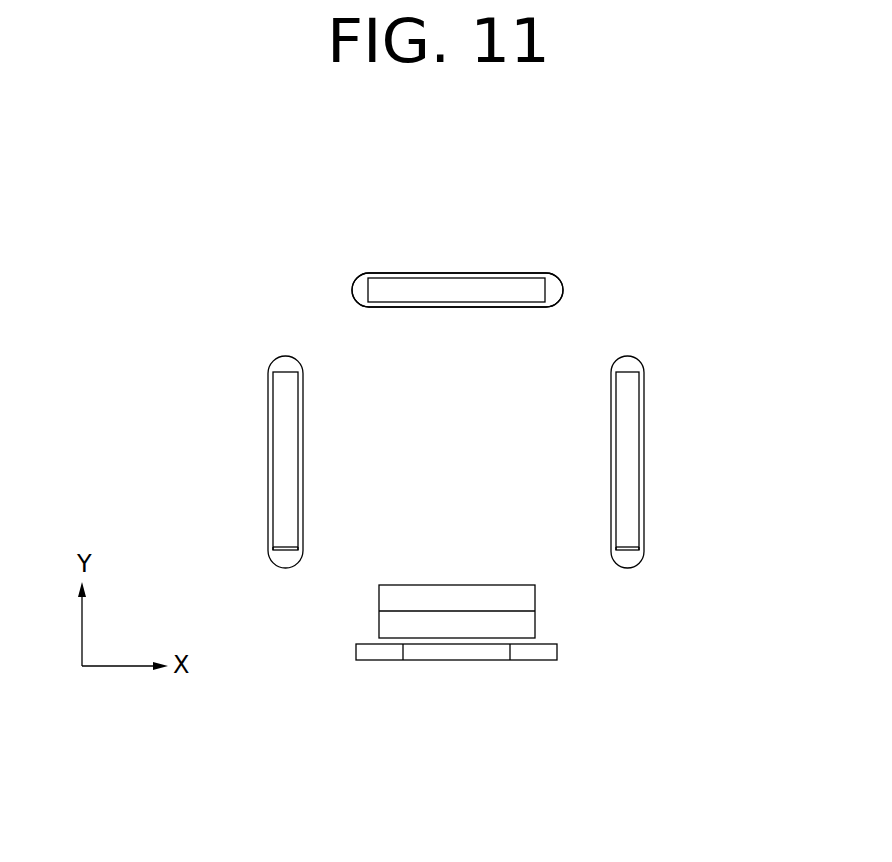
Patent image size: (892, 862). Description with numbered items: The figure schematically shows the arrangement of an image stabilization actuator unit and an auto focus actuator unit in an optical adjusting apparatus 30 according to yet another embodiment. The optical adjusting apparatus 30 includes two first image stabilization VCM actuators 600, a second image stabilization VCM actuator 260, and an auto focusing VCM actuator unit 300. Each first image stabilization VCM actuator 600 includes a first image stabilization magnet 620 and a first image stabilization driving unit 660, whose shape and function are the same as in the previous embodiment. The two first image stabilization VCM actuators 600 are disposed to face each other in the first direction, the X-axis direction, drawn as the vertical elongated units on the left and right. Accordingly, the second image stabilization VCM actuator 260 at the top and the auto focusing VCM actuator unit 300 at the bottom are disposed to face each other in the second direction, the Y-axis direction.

The optical adjusting apparatus 30 is at (260, 261).
The second image stabilization VCM actuator 260 is at (464, 255).
The first image stabilization VCM actuator 600 is at (245, 459).
The first image stabilization magnet 620 is at (285, 500).
The first image stabilization driving unit 660 is at (283, 557).
The auto focusing VCM actuator unit 300 is at (461, 693).